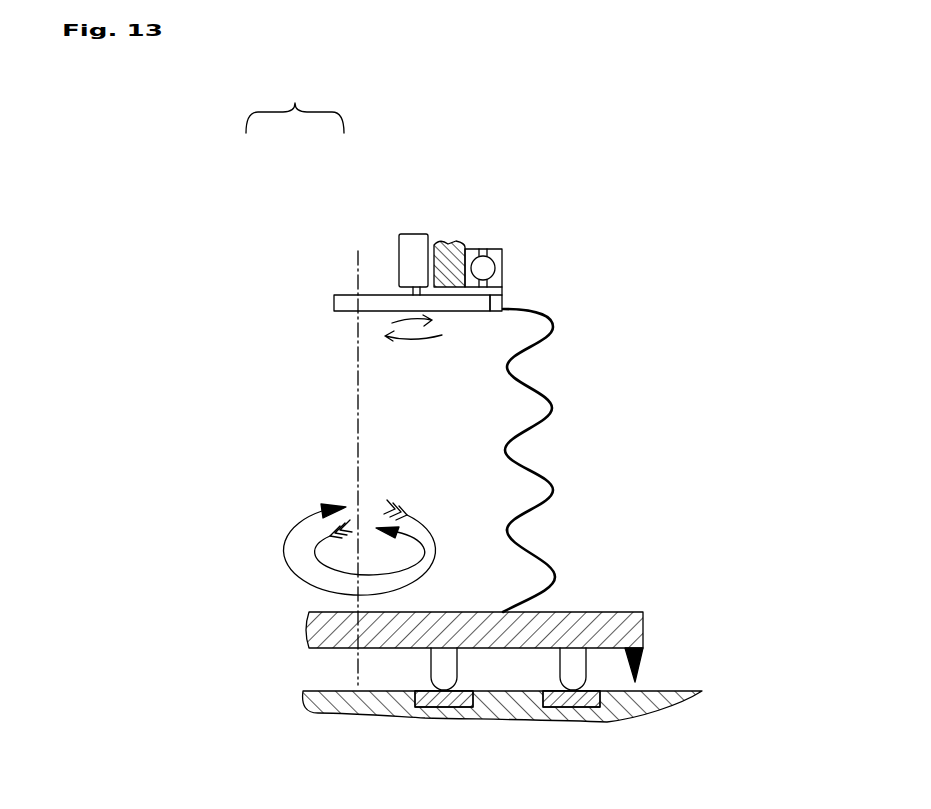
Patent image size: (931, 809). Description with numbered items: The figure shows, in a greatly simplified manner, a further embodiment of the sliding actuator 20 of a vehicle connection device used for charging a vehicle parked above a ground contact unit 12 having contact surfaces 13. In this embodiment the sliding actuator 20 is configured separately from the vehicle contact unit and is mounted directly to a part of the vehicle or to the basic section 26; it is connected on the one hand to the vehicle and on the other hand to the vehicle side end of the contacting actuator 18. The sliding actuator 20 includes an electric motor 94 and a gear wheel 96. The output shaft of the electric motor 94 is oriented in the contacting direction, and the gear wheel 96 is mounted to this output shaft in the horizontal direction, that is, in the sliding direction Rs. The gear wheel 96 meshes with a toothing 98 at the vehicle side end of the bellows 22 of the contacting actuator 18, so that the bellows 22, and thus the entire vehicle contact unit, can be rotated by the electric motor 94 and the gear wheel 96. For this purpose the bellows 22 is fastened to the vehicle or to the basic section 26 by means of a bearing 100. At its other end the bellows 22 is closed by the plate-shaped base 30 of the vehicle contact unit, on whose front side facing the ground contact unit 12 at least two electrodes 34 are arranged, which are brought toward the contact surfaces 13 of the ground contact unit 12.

The sliding actuator 20 is at (295, 105).
The electric motor 94 is at (413, 243).
The basic section 26 is at (445, 243).
The bearing 100 is at (500, 249).
The gear wheel 96 is at (347, 300).
The toothing 98 is at (500, 302).
The contacting actuator 18 is at (571, 384).
The bellows 22 is at (545, 562).
The base 30 is at (608, 615).
The electrodes 34 is at (435, 678).
The ground contact unit 12 is at (615, 722).
The contact surfaces 13 is at (538, 717).
The sliding direction Rs is at (305, 518).